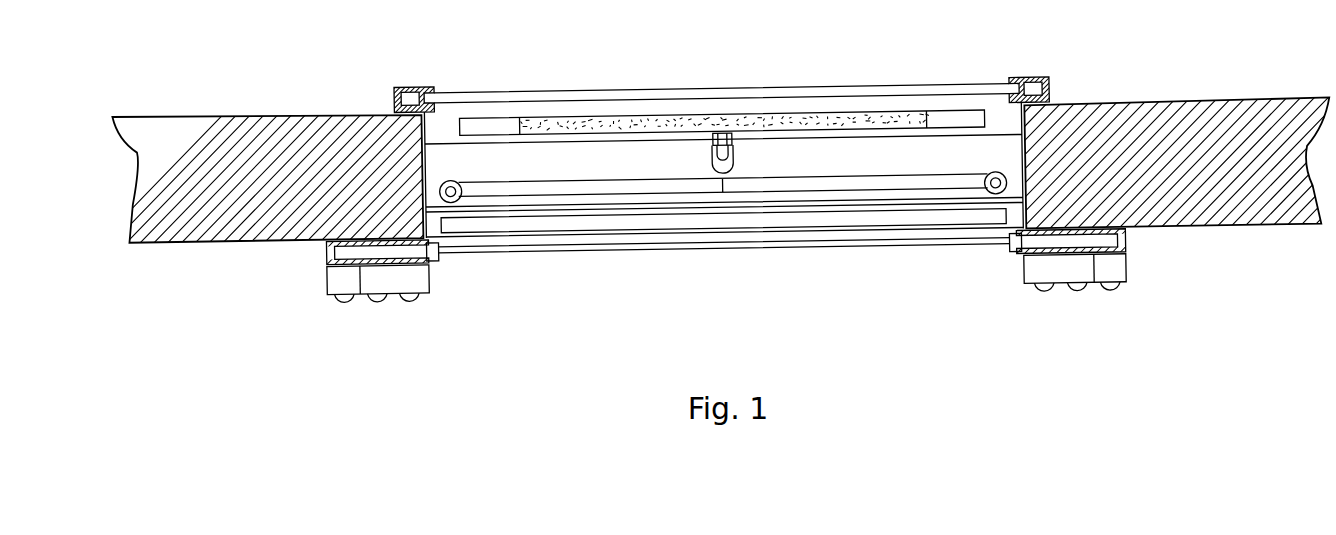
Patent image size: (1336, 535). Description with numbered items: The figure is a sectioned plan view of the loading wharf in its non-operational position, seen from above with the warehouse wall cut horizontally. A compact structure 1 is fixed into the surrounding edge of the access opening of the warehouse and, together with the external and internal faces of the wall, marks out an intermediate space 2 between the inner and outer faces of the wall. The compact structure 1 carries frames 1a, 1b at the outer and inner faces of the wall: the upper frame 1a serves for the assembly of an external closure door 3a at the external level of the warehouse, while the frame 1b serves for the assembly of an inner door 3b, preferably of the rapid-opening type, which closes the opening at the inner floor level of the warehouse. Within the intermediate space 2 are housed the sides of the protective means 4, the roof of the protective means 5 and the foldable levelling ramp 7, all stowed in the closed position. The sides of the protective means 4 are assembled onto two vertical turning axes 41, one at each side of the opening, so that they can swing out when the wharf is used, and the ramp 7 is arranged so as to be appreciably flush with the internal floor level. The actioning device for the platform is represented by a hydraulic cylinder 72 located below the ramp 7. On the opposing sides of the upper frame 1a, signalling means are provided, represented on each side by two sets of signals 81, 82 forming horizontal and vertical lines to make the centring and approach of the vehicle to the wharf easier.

The compact structure 1 is at (420, 152).
The upper frame 1a is at (328, 250).
The frame 1b is at (396, 88).
The intermediate space 2 is at (915, 160).
The external closure door 3a is at (577, 246).
The inner door 3b is at (483, 96).
The sides of the protective means 4 is at (577, 188).
The vertical turning axes 41 is at (456, 199).
The roof of the protective means 5 is at (757, 213).
The foldable ramp 7 is at (633, 119).
The hydraulic cylinder 72 is at (720, 139).
The set of signals 81 is at (388, 277).
The set of signals 82 is at (337, 278).